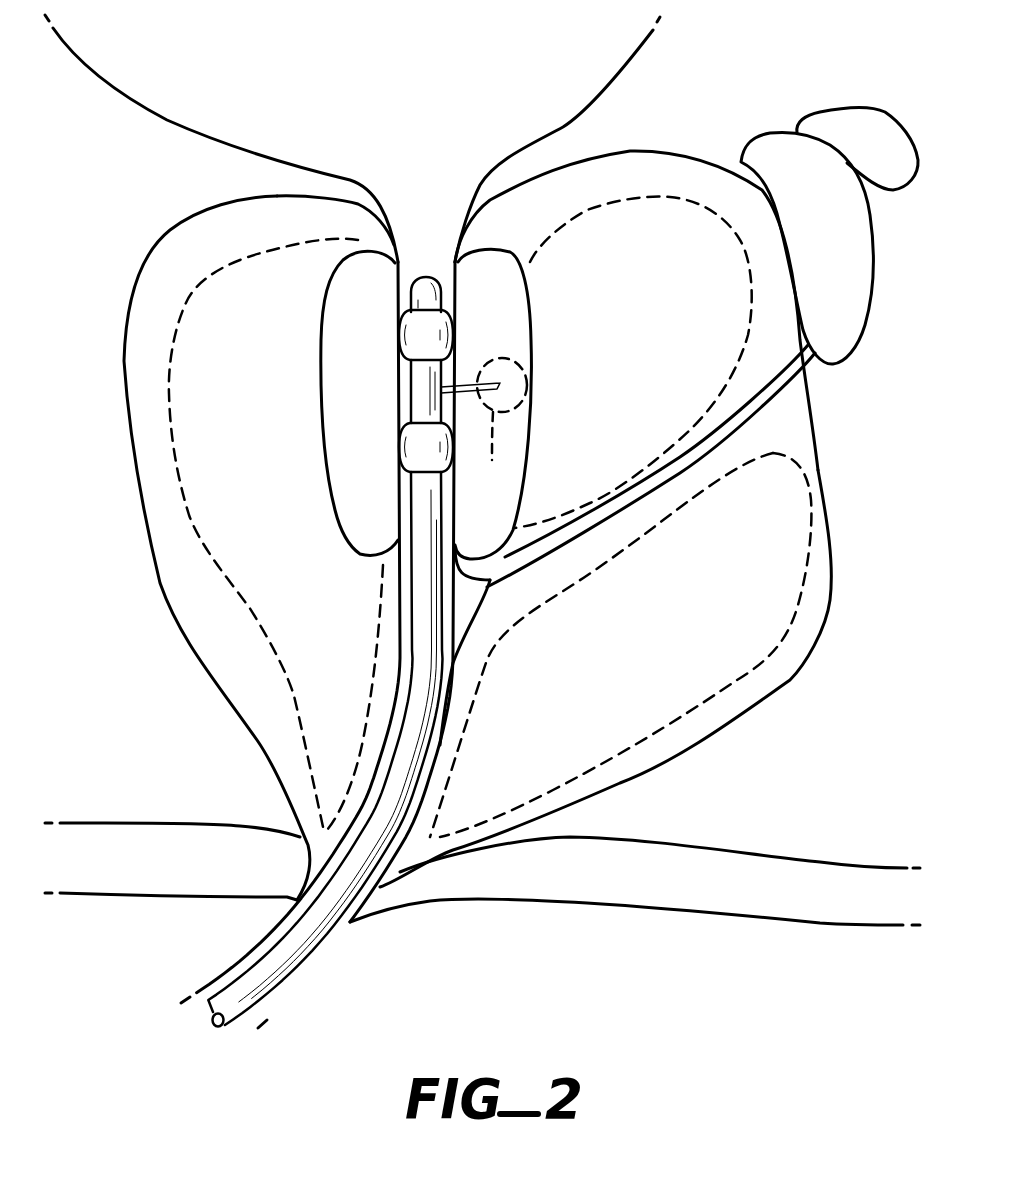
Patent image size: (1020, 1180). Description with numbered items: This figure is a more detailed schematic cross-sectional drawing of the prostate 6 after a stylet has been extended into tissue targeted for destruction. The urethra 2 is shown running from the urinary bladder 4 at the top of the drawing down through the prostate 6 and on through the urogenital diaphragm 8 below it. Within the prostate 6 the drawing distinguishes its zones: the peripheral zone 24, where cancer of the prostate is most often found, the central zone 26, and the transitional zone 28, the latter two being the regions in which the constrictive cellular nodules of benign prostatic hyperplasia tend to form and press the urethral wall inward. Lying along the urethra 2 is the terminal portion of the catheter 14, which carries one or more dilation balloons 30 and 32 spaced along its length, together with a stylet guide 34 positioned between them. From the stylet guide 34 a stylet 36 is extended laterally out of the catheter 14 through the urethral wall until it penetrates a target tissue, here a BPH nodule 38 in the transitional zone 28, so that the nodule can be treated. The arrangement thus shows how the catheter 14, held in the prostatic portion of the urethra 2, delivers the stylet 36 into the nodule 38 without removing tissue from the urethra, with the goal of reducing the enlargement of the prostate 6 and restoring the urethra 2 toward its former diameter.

The urethra 2 is at (442, 740).
The urinary bladder 4 is at (436, 39).
The prostate 6 is at (223, 697).
The urogenital diaphragm 8 is at (630, 877).
The catheter 14 is at (330, 905).
The peripheral zone 24 is at (685, 668).
The central zone 26 is at (653, 232).
The transitional zone 28 is at (467, 275).
The dilation balloon 30 is at (408, 338).
The dilation balloon 32 is at (417, 450).
The stylet guide 34 is at (417, 393).
The stylet 36 is at (481, 358).
The BPH nodule 38 is at (485, 453).